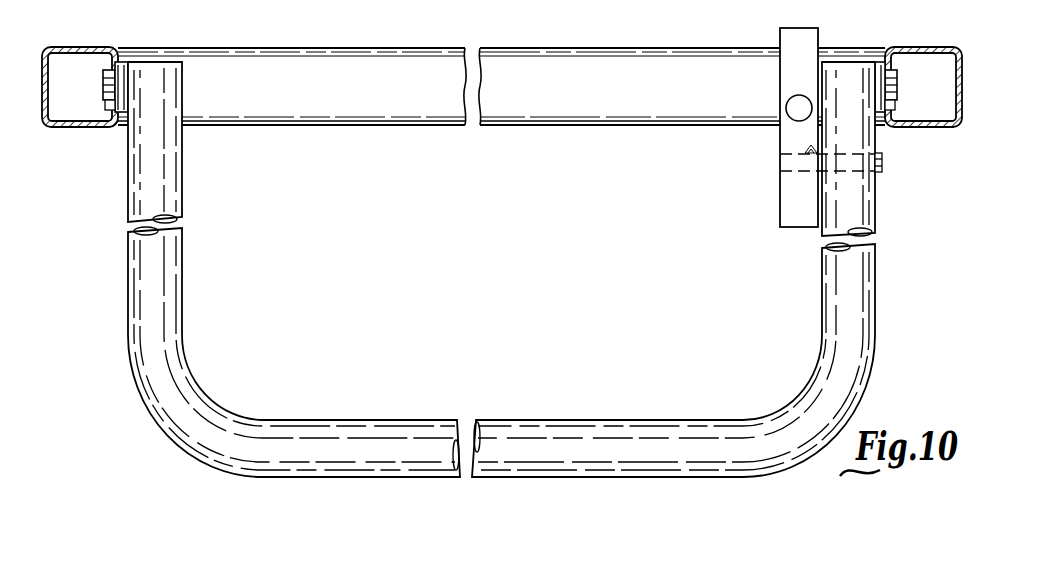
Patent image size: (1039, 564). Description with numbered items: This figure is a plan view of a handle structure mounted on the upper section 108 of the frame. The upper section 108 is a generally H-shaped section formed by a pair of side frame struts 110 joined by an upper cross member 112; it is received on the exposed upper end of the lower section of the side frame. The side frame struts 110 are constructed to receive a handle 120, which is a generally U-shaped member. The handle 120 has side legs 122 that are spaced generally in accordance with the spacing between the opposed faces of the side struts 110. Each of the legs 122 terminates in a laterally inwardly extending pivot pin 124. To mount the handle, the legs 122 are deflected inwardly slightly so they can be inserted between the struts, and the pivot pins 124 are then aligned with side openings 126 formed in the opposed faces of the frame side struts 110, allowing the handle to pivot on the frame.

The upper section 108 is at (525, 130).
The side frame struts 110 is at (97, 47).
The upper cross member 112 is at (527, 20).
The handle 120 is at (528, 378).
The side legs 122 is at (128, 260).
The pivot pins 124 is at (103, 85).
The side openings 126 is at (108, 103).